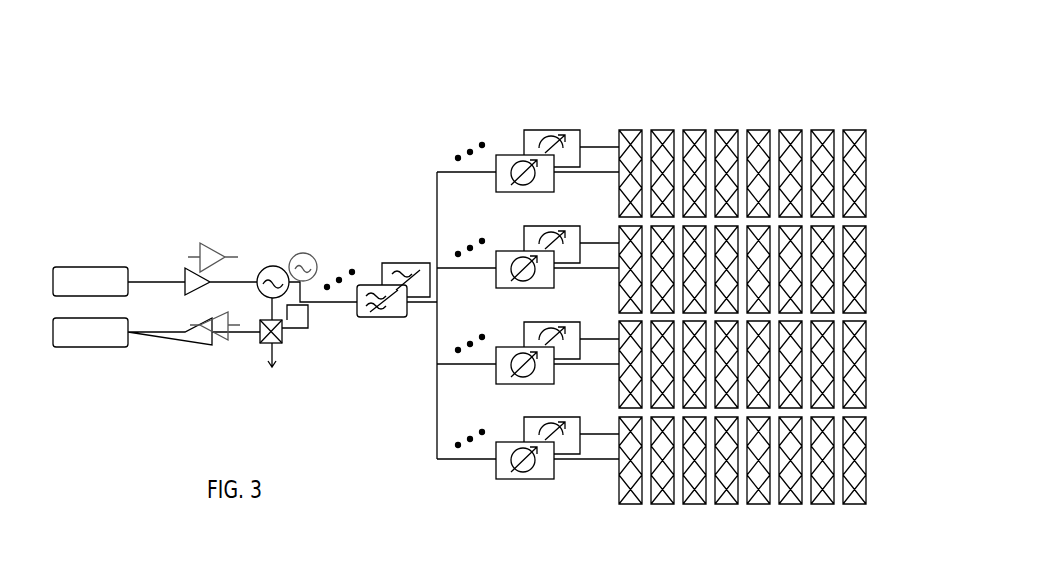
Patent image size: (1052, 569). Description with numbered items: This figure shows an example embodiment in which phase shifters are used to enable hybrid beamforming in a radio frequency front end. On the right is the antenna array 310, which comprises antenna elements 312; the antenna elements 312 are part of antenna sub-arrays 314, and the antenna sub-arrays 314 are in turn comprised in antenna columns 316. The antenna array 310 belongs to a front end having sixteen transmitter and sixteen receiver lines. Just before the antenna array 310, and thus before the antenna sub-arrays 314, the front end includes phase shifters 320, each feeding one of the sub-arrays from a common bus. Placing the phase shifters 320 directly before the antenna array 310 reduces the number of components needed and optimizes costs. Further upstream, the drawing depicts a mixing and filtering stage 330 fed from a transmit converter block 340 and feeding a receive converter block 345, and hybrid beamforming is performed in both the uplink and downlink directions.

The antenna array 310 is at (772, 267).
The antenna elements 312 is at (771, 147).
The antenna sub-arrays 314 is at (875, 320).
The antenna columns 316 is at (619, 125).
The phase shifters 320 is at (463, 122).
The mixer and filter stage 330 is at (247, 227).
The TX DAC 340 is at (69, 281).
The RX ADC 345 is at (69, 332).